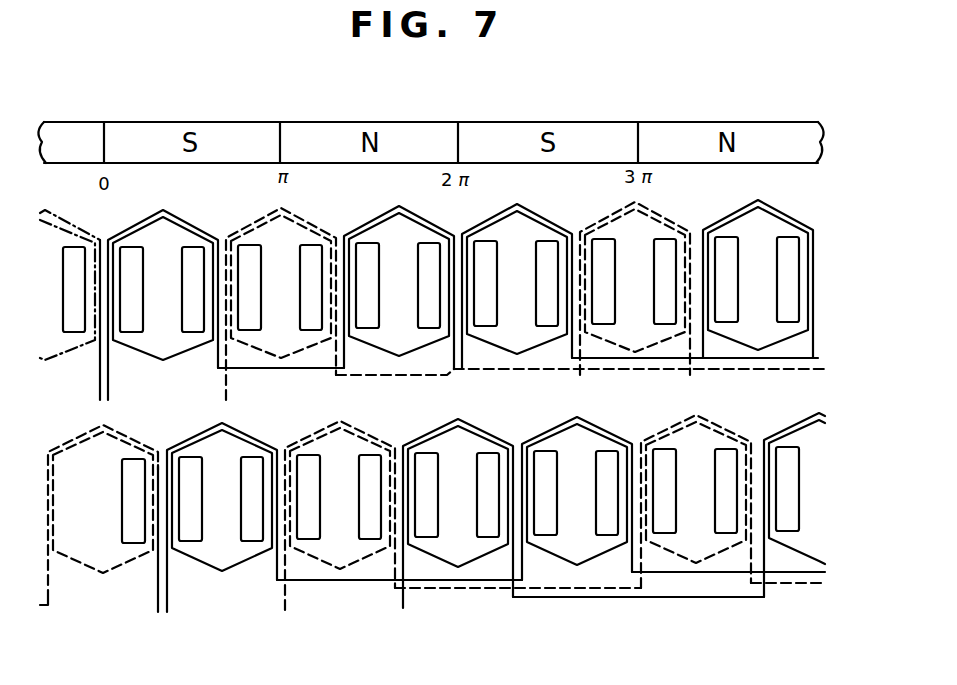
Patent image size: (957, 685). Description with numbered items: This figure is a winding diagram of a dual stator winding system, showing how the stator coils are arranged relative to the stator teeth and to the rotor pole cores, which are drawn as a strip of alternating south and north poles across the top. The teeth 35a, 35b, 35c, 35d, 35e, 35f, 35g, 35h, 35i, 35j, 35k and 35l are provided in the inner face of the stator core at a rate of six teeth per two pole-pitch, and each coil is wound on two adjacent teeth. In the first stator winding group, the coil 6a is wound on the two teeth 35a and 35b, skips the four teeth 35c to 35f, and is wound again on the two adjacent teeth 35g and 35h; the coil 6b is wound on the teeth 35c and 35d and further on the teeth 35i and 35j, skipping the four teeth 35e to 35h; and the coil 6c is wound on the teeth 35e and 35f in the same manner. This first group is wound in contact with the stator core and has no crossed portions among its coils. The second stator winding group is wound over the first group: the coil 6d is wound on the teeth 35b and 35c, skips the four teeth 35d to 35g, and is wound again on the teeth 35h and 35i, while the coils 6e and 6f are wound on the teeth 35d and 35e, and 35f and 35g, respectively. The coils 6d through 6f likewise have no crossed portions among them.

The coil 6a is at (133, 222).
The coil 6b is at (250, 228).
The coil 6c is at (362, 224).
The coil 6d is at (212, 574).
The coil 6e is at (332, 570).
The coil 6f is at (445, 567).
The tooth 35a is at (133, 459).
The tooth 35b is at (190, 457).
The tooth 35c is at (252, 457).
The tooth 35d is at (308, 455).
The tooth 35e is at (370, 455).
The tooth 35f is at (403, 405).
The tooth 35g is at (488, 453).
The tooth 35h is at (546, 451).
The tooth 35i is at (607, 451).
The tooth 35j is at (664, 449).
The tooth 35k is at (726, 449).
The tooth 35l is at (788, 447).